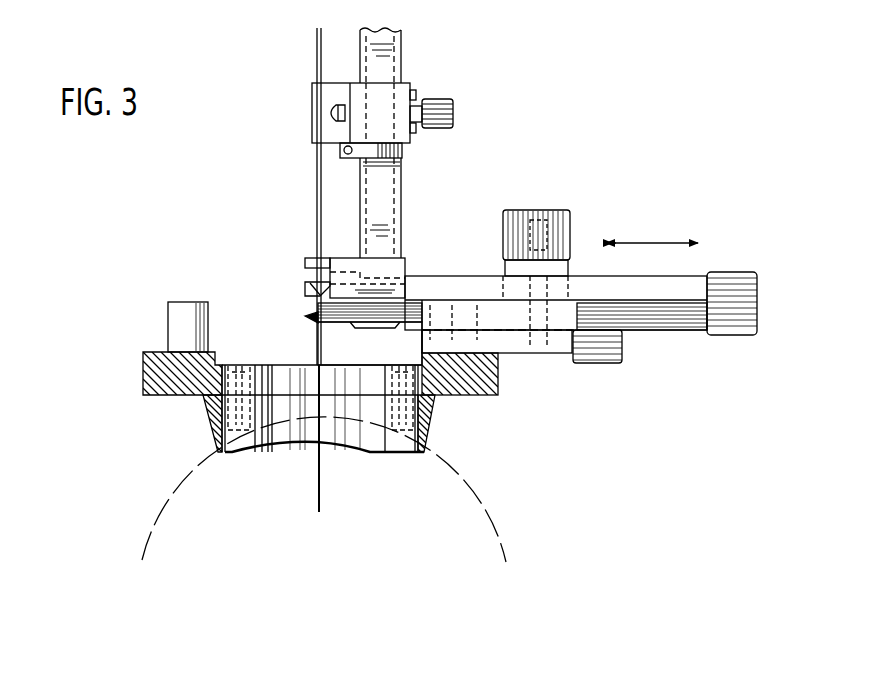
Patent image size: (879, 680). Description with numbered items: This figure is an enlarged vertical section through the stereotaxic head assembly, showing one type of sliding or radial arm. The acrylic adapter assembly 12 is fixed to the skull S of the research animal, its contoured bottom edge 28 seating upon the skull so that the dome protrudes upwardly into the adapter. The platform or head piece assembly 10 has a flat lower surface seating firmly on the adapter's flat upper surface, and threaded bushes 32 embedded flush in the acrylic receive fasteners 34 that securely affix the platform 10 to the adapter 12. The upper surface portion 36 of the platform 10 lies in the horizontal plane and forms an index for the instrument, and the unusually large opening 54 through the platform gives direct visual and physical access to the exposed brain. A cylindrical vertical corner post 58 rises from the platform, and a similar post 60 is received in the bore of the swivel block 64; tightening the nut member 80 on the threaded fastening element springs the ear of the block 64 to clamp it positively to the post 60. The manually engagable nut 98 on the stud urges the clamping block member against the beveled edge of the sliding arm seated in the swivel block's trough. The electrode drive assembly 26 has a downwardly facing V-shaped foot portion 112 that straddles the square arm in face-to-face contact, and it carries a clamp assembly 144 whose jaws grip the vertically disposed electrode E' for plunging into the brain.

The platform or head piece assembly 10 is at (132, 381).
The adapter assembly 12 is at (438, 431).
The electrode drive assembly 26 is at (406, 72).
The bottom edge 28 is at (301, 450).
The threaded bushes 32 is at (241, 442).
The fasteners 34 is at (244, 375).
The upper surface portion 36 is at (157, 352).
The opening 54 is at (300, 378).
The vertical corner post 58 is at (178, 318).
The vertical corner post 60 is at (462, 318).
The block 64 is at (510, 343).
The nut member 80 is at (757, 296).
The manually engagable nut 98 is at (520, 214).
The V-shaped foot portion 112 is at (383, 268).
The clamp assembly 144 is at (458, 107).
The electrode E' is at (291, 270).
The skull S is at (493, 524).